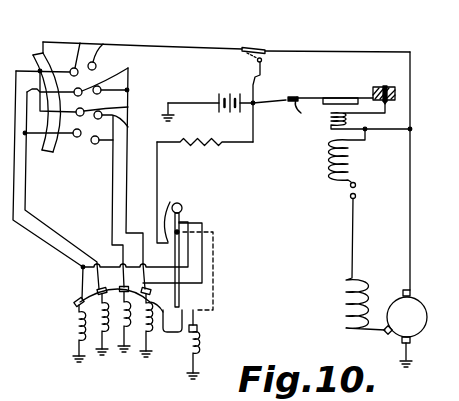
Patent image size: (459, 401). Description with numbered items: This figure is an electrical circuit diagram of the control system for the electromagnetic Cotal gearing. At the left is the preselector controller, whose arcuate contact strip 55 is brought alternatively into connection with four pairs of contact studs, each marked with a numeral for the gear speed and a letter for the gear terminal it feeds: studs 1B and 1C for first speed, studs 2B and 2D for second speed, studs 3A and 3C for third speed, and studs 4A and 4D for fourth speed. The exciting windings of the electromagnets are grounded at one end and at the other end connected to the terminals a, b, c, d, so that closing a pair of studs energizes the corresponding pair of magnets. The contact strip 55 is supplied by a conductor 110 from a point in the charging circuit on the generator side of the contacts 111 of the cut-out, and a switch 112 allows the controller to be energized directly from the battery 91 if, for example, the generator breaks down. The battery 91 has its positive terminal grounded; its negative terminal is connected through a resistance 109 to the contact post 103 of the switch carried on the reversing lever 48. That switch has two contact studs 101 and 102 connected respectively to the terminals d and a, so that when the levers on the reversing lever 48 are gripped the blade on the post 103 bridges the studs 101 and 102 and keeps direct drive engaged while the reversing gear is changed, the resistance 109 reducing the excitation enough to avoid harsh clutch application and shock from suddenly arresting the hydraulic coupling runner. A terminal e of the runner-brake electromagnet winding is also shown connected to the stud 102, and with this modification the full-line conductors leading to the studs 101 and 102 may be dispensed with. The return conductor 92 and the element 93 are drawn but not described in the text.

The contact stud 4D is at (83, 51).
The contact stud 4A is at (108, 49).
The contact stud 3C is at (111, 161).
The contact stud 3A is at (124, 89).
The contact stud 2D is at (113, 110).
The contact stud 2B is at (122, 187).
The contact stud 1C is at (76, 137).
The contact stud 1B is at (95, 144).
The arcuate contact strip 55 is at (46, 152).
The conductor 110 is at (331, 54).
The switch 112 is at (263, 84).
The return conductor 92 is at (421, 171).
The battery 91 is at (231, 90).
The contacts of the cut-out 111 is at (349, 208).
The resistance 109 is at (218, 146).
The contact stud 101 is at (182, 208).
The contact stud 102 is at (180, 231).
The contact post 103 is at (165, 205).
The reversing lever 48 is at (179, 295).
The motor 93 is at (405, 328).
The terminal d is at (74, 301).
The terminal c is at (97, 309).
The terminal b is at (119, 308).
The terminal a is at (142, 310).
The terminal e is at (198, 344).